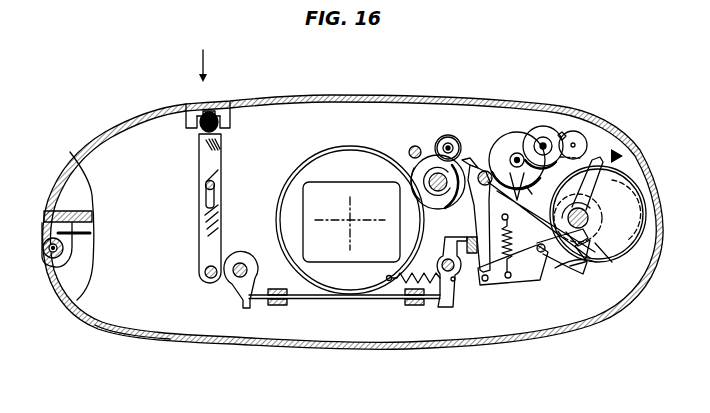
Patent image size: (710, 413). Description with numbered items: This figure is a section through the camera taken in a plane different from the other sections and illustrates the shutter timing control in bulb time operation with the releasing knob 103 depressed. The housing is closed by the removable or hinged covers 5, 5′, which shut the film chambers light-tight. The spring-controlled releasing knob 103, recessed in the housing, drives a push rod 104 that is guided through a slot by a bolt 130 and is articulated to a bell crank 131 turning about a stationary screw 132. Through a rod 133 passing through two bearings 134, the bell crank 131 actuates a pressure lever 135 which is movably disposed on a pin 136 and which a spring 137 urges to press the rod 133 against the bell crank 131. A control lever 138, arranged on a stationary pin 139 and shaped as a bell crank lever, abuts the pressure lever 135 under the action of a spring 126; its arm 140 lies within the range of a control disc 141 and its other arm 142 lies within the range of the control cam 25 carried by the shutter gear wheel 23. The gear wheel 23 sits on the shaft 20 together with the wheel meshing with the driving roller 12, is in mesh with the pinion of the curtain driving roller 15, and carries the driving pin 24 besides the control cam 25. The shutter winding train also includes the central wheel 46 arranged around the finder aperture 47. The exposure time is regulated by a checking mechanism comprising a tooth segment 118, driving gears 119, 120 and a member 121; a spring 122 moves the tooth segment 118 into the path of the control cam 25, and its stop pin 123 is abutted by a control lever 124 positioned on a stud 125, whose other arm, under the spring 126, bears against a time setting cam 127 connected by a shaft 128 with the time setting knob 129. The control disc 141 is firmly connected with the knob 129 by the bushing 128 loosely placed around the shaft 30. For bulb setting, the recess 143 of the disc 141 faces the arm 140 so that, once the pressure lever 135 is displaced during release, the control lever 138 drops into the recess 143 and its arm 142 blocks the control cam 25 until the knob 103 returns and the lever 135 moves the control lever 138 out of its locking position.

The cover 5 is at (342, 222).
The cover 5' is at (116, 342).
The releasing knob 103 is at (193, 108).
The push rod 104 is at (177, 208).
The bolt 130 is at (206, 186).
The bell crank 131 is at (212, 280).
The stationary screw 132 is at (243, 290).
The rod 133 is at (322, 300).
The bearings 134 is at (277, 307).
The spring 137 is at (402, 281).
The pin 136 is at (442, 302).
The pressure lever 135 is at (452, 308).
The control lever 138 is at (493, 223).
The stationary pin 139 is at (509, 280).
The spring 126 is at (512, 265).
The control lever 124 is at (542, 253).
The stud 125 is at (560, 276).
The arm 140 is at (546, 282).
The time setting cam 127 is at (593, 264).
The control disc 141 is at (580, 232).
The recess 143 is at (600, 250).
The time setting knob 129 is at (620, 190).
The shaft 30 is at (607, 175).
The bushing 128 is at (600, 157).
The member 121 is at (568, 132).
The driving gear 120 is at (550, 137).
The driving gear 119 is at (530, 138).
The tooth segment 118 is at (522, 140).
The spring 122 is at (487, 171).
The arm 142 is at (466, 162).
The gear wheel 23 is at (451, 143).
The driving roller 15 is at (438, 112).
The shaft 20 is at (408, 158).
The driving pin 24 is at (413, 147).
The driving roller 12 is at (430, 174).
The control cam 25 is at (413, 162).
The central wheel 46 is at (341, 180).
The finder aperture 47 is at (318, 183).
The stop pin 123 is at (522, 196).